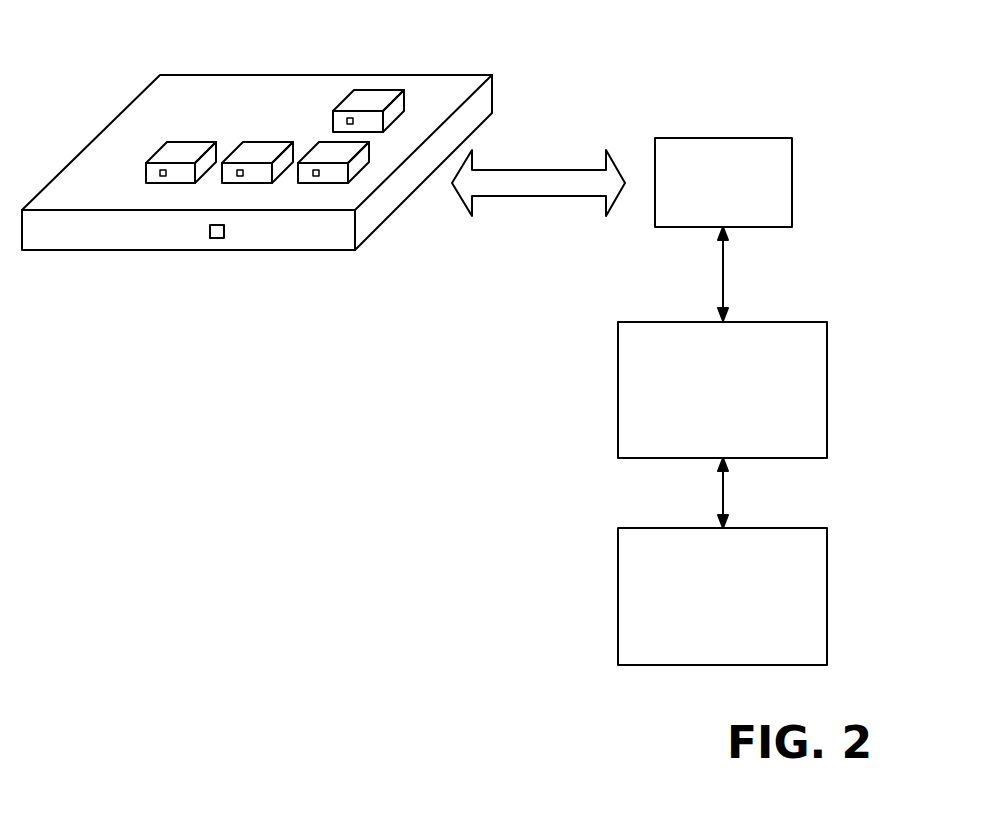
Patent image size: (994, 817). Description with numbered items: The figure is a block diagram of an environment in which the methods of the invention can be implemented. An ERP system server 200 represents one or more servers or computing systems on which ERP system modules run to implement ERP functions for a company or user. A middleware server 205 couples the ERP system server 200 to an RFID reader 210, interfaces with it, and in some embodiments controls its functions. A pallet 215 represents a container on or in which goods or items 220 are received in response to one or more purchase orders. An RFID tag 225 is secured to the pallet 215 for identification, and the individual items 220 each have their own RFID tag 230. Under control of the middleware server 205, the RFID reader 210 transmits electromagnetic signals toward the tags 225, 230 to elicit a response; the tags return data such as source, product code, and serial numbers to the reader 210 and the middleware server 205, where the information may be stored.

The ERP system server 200 is at (829, 598).
The middleware server 205 is at (829, 352).
The RFID reader 210 is at (792, 163).
The pallet 215 is at (144, 90).
The goods or items 220 is at (161, 148).
The RFID tag 225 is at (210, 238).
The RFID tag 230 is at (159, 177).